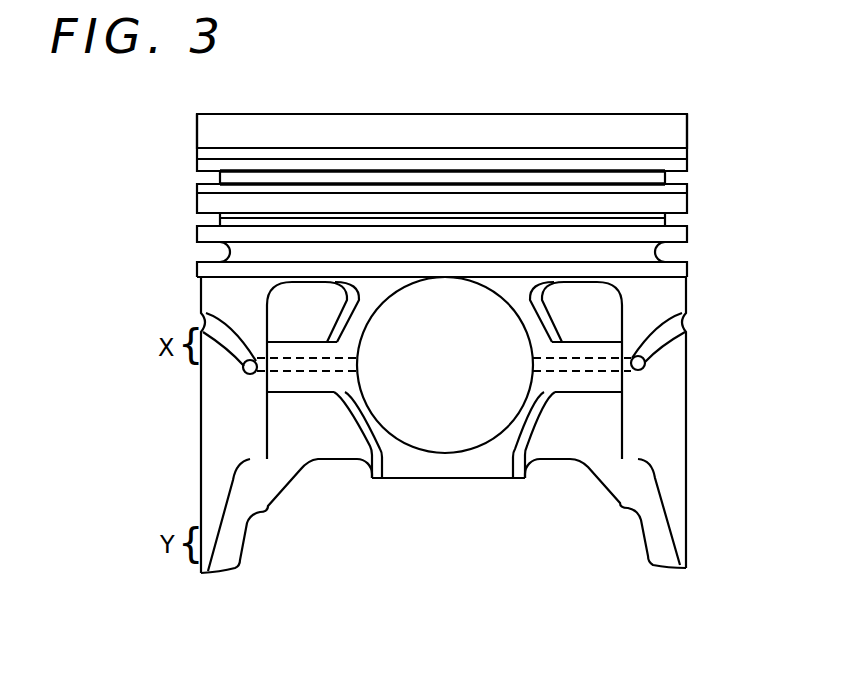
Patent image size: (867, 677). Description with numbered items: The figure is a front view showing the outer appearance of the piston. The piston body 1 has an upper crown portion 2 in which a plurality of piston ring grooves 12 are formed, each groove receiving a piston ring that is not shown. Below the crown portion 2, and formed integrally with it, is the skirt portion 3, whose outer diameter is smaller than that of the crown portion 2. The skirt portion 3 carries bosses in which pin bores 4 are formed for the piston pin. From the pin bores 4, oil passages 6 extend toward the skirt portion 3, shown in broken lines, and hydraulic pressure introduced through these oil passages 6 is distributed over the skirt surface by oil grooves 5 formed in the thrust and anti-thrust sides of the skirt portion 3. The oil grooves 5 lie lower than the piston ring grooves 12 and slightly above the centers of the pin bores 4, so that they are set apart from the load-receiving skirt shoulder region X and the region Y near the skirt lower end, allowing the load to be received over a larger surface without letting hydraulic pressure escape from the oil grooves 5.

The piston body 1 is at (624, 108).
The crown portion 2 is at (676, 131).
The piston ring grooves 12 is at (678, 175).
The skirt portion 3 is at (230, 434).
The pin bores 4 is at (455, 412).
The oil grooves 5 is at (230, 341).
The oil passages 6 is at (310, 372).